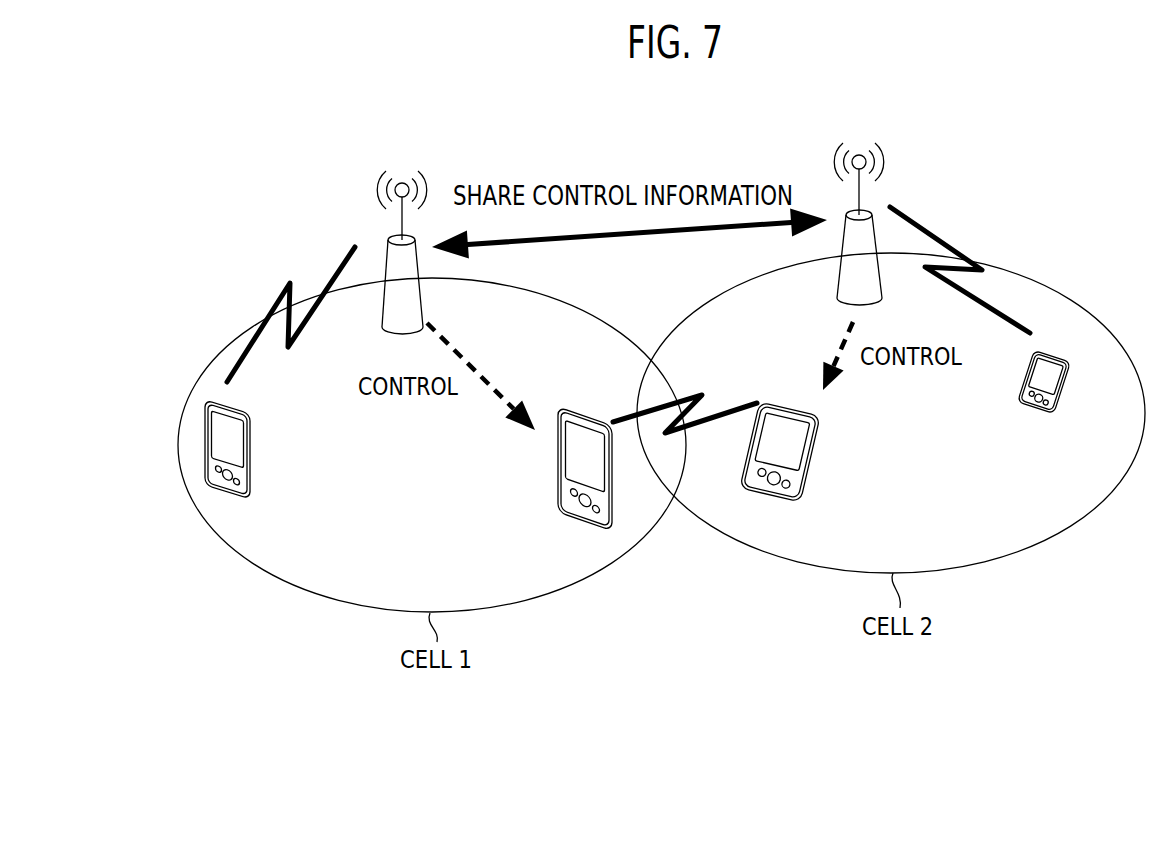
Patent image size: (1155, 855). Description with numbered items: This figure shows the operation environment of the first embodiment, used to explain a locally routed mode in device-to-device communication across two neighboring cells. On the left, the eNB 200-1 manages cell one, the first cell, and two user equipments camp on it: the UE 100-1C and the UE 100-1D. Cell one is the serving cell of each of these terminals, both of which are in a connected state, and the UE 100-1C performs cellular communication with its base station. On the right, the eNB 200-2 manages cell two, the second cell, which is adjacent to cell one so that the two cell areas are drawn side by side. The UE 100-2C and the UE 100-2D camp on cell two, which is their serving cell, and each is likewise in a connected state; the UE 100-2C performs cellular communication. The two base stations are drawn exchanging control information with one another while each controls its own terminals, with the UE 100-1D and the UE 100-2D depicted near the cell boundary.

The eNB 200-1 is at (383, 250).
The eNB 200-2 is at (870, 212).
The UE 100-1C is at (253, 480).
The UE 100-1D is at (577, 520).
The UE 100-2C is at (1035, 412).
The UE 100-2D is at (780, 505).